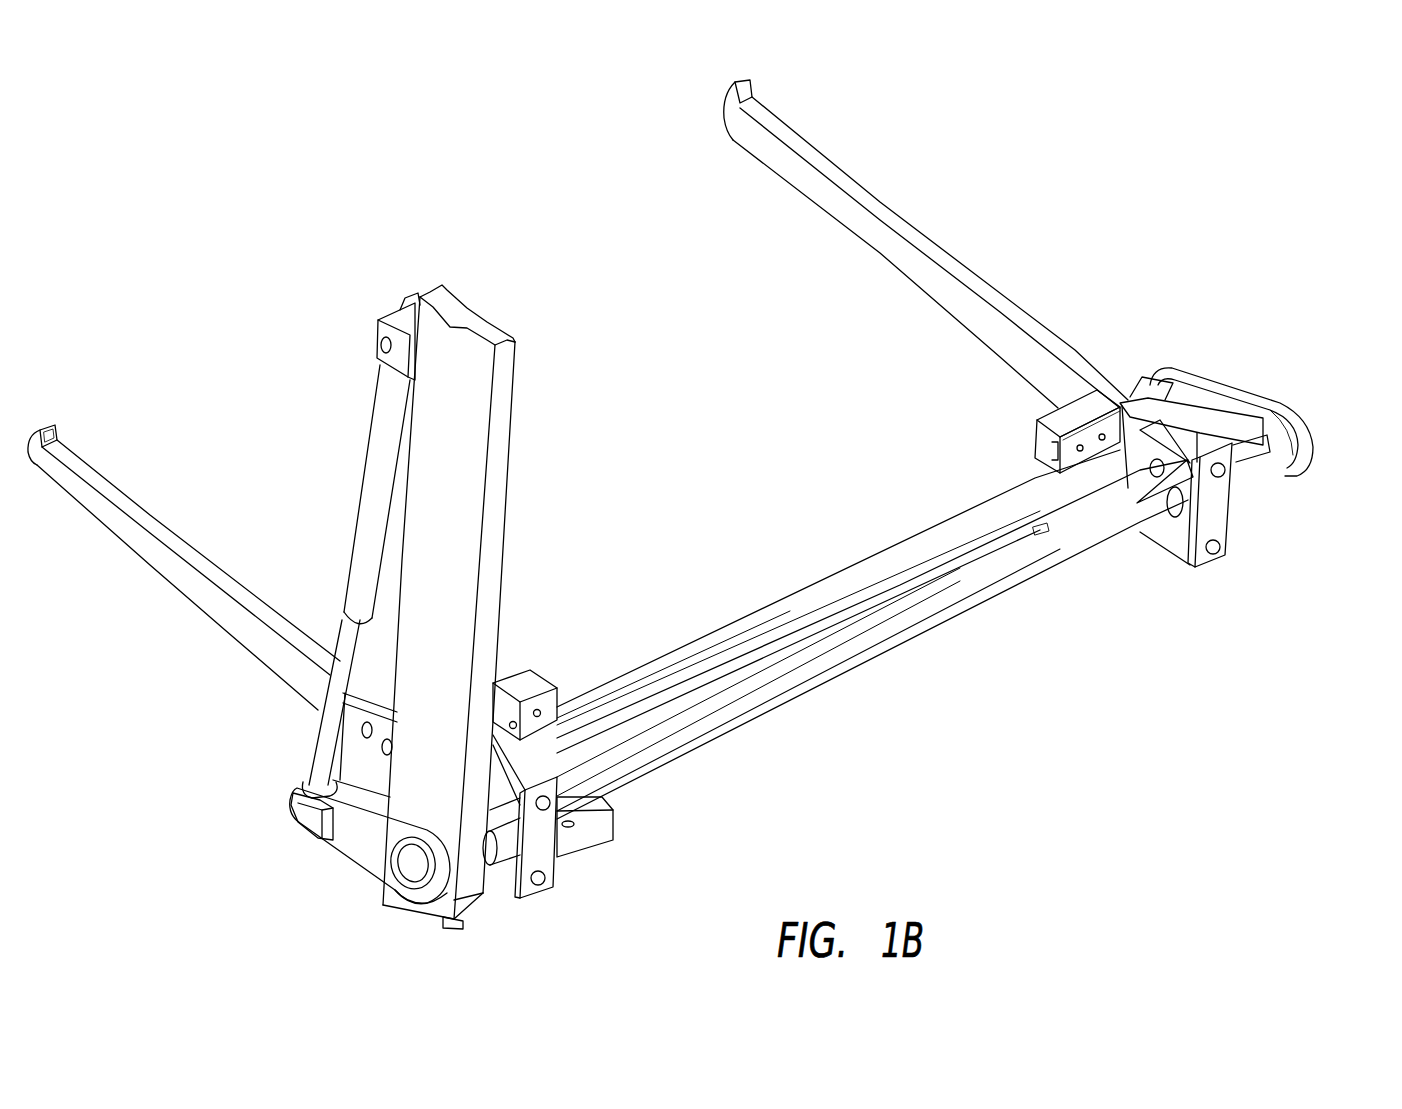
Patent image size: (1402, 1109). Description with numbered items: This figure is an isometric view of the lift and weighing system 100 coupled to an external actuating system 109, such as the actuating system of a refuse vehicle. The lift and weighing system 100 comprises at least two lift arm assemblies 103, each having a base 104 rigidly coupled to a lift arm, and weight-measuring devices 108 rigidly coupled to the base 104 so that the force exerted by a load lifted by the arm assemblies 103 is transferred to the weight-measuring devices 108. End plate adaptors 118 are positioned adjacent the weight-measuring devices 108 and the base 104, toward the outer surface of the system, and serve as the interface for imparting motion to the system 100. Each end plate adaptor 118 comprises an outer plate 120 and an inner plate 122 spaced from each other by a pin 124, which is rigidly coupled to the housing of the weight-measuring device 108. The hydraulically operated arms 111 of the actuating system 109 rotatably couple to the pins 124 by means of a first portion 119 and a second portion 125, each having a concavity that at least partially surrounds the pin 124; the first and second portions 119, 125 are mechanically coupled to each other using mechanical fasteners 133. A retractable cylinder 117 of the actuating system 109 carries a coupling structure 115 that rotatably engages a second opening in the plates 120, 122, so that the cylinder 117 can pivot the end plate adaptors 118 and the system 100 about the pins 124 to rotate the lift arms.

The lift and weighing system 100 is at (1108, 290).
The lift arm assembly 103 is at (967, 348).
The base 104 is at (1153, 398).
The weight-measuring device 108 is at (1212, 508).
The external actuating system 109 is at (502, 579).
The hydraulically operated arm 111 is at (502, 602).
The coupling structure 115 is at (293, 812).
The retractable cylinder 117 is at (323, 418).
The end plate adaptor 118 is at (312, 832).
The first portion 119 is at (492, 530).
The outer plate 120 is at (353, 842).
The inner plate 122 is at (352, 792).
The pin 124 is at (1290, 452).
The second portion 125 is at (467, 902).
The mechanical fastener 133 is at (457, 923).